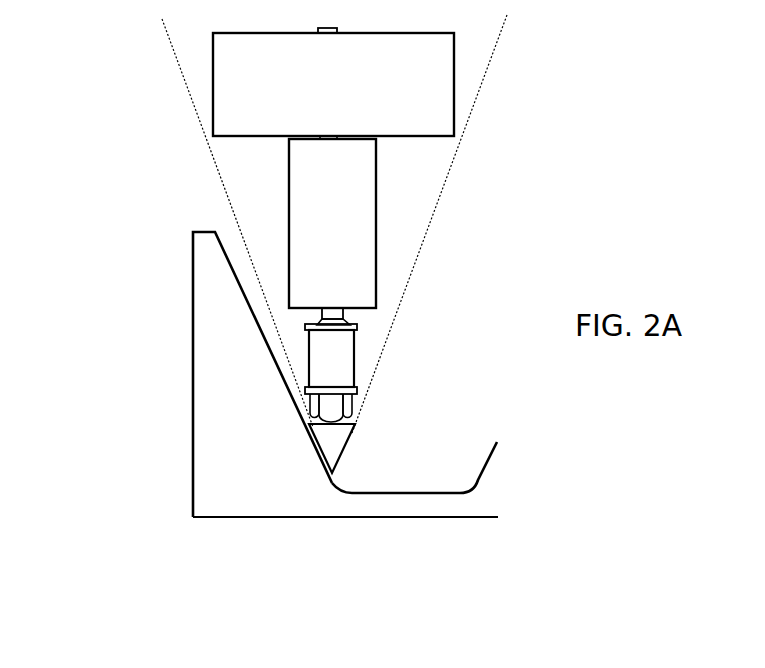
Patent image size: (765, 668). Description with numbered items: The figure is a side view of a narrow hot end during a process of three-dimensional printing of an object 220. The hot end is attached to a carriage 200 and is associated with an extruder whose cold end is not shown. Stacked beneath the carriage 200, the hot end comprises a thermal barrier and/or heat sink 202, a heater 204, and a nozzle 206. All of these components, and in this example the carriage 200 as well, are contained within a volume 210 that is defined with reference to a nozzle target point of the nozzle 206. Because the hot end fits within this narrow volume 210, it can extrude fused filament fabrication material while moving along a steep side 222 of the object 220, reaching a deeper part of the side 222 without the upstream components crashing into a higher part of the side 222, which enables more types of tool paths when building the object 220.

The carriage 200 is at (472, 75).
The thermal barrier and/or heat sink 202 is at (395, 222).
The heater 204 is at (374, 345).
The nozzle 206 is at (370, 435).
The volume 210 is at (218, 178).
The object 220 is at (508, 492).
The steep side 222 is at (245, 290).